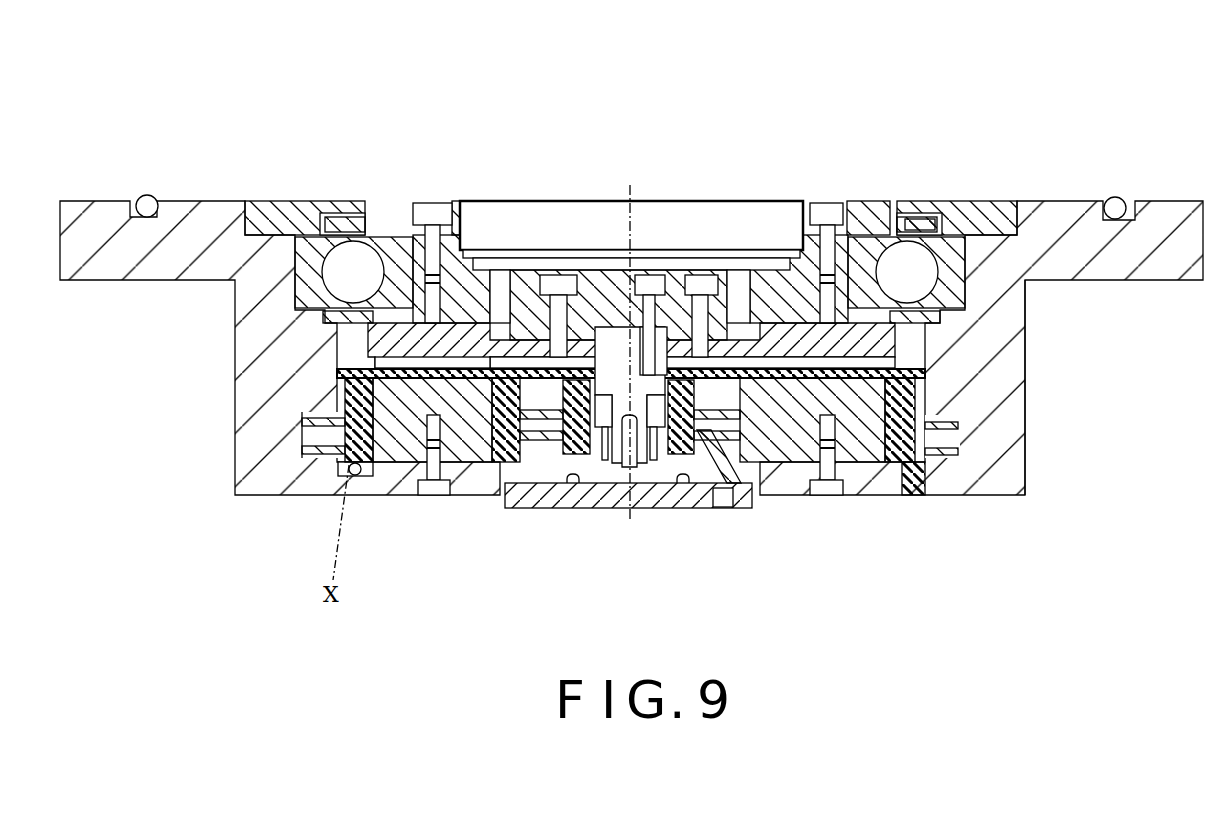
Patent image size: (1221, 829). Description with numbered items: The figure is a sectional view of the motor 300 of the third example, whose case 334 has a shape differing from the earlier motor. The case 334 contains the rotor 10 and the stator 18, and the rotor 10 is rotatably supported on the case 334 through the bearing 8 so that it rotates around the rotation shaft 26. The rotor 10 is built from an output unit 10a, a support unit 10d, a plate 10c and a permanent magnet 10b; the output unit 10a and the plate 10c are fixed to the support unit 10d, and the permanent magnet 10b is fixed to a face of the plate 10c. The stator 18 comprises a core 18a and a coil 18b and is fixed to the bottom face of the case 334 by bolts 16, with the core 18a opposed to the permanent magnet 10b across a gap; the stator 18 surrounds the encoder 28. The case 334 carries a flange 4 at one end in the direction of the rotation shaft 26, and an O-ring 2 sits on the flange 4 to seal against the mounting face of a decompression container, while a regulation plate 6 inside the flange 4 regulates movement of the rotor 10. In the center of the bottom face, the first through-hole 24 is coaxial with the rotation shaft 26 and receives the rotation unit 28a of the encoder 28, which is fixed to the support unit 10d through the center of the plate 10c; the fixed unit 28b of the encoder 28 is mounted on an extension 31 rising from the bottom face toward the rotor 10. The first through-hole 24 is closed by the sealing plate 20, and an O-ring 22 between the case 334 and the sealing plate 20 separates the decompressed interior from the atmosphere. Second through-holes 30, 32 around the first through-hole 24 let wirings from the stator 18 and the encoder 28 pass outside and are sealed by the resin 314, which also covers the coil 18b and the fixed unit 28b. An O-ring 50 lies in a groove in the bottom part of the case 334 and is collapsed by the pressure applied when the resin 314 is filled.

The motor 300 is at (1097, 96).
The O-ring 2 is at (1115, 198).
The flange 4 is at (1040, 212).
The regulation plate 6 is at (995, 215).
The bearing 8 is at (932, 270).
The rotor 10 is at (912, 120).
The output unit 10a is at (885, 218).
The permanent magnet 10b is at (855, 357).
The plate 10c is at (796, 340).
The support unit 10d is at (737, 287).
The bolts 16 is at (433, 488).
The stator 18 is at (435, 499).
The core 18a is at (457, 455).
The coil 18b is at (493, 462).
The sealing plate 20 is at (548, 508).
The O-ring 22 is at (572, 486).
The first through-hole 24 is at (597, 470).
The rotation shaft 26 is at (628, 513).
The encoder 28 is at (666, 508).
The rotation unit 28a is at (662, 470).
The fixed unit 28b is at (705, 470).
The second through-hole 30 is at (703, 427).
The extension 31 is at (742, 450).
The second through-hole 32 is at (910, 497).
The O-ring 50 is at (358, 476).
The resin 314 is at (348, 465).
The case 334 is at (1005, 405).